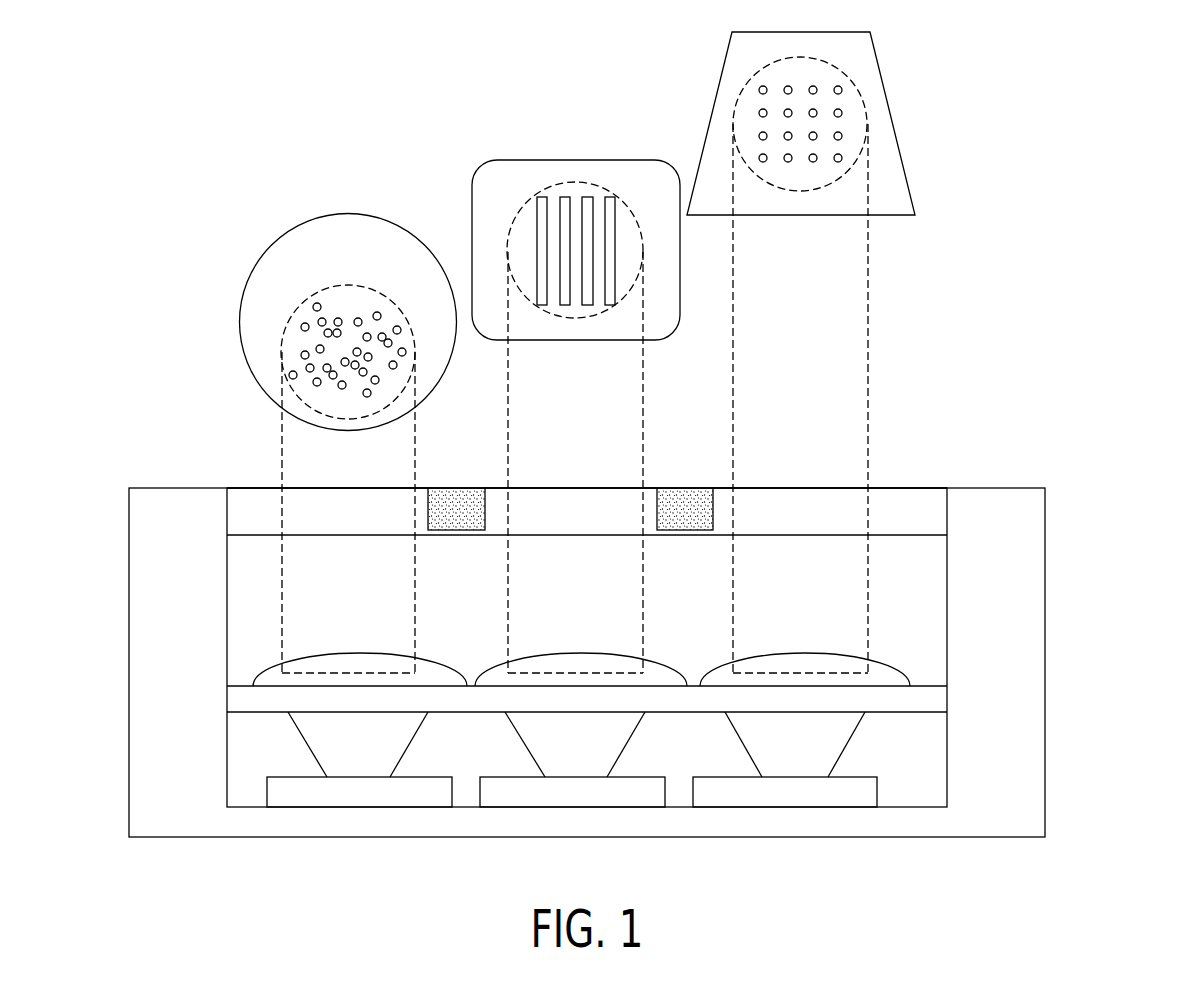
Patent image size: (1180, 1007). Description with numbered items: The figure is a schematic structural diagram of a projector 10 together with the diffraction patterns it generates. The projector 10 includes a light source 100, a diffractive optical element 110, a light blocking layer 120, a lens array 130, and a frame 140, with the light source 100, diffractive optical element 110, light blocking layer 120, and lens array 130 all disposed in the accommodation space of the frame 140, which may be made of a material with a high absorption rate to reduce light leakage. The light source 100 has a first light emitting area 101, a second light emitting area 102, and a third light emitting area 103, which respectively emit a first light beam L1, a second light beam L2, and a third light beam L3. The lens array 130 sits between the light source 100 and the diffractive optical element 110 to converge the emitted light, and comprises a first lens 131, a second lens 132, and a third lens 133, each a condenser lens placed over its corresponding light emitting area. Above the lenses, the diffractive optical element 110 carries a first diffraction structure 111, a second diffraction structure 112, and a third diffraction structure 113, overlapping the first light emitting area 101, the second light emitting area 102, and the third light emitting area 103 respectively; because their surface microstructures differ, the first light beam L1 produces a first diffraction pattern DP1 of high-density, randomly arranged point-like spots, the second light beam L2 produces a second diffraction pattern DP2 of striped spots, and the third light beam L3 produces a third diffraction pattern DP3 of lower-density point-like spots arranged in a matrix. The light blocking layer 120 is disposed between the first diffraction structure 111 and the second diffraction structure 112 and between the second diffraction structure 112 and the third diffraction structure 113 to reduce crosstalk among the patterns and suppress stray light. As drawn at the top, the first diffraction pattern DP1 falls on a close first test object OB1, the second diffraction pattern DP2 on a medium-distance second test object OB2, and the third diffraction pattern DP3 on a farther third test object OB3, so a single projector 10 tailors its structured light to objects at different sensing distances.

The projector 10 is at (1082, 870).
The light source 100 is at (1120, 33).
The first light emitting area 101 is at (362, 820).
The second light emitting area 102 is at (577, 820).
The third light emitting area 103 is at (789, 820).
The diffractive optical element 110 is at (1120, 150).
The first diffraction structure 111 is at (258, 498).
The second diffraction structure 112 is at (583, 500).
The third diffraction structure 113 is at (803, 498).
The light blocking layer 120 is at (463, 505).
The lens array 130 is at (935, 700).
The first lens 131 is at (270, 677).
The second lens 132 is at (555, 662).
The third lens 133 is at (890, 678).
The frame 140 is at (1028, 524).
The first light beam L1 is at (300, 602).
The second light beam L2 is at (623, 548).
The third light beam L3 is at (850, 603).
The first test object OB1 is at (280, 262).
The second test object OB2 is at (495, 180).
The third test object OB3 is at (870, 83).
The first diffraction pattern DP1 is at (285, 330).
The second diffraction pattern DP2 is at (513, 226).
The third diffraction pattern DP3 is at (737, 100).